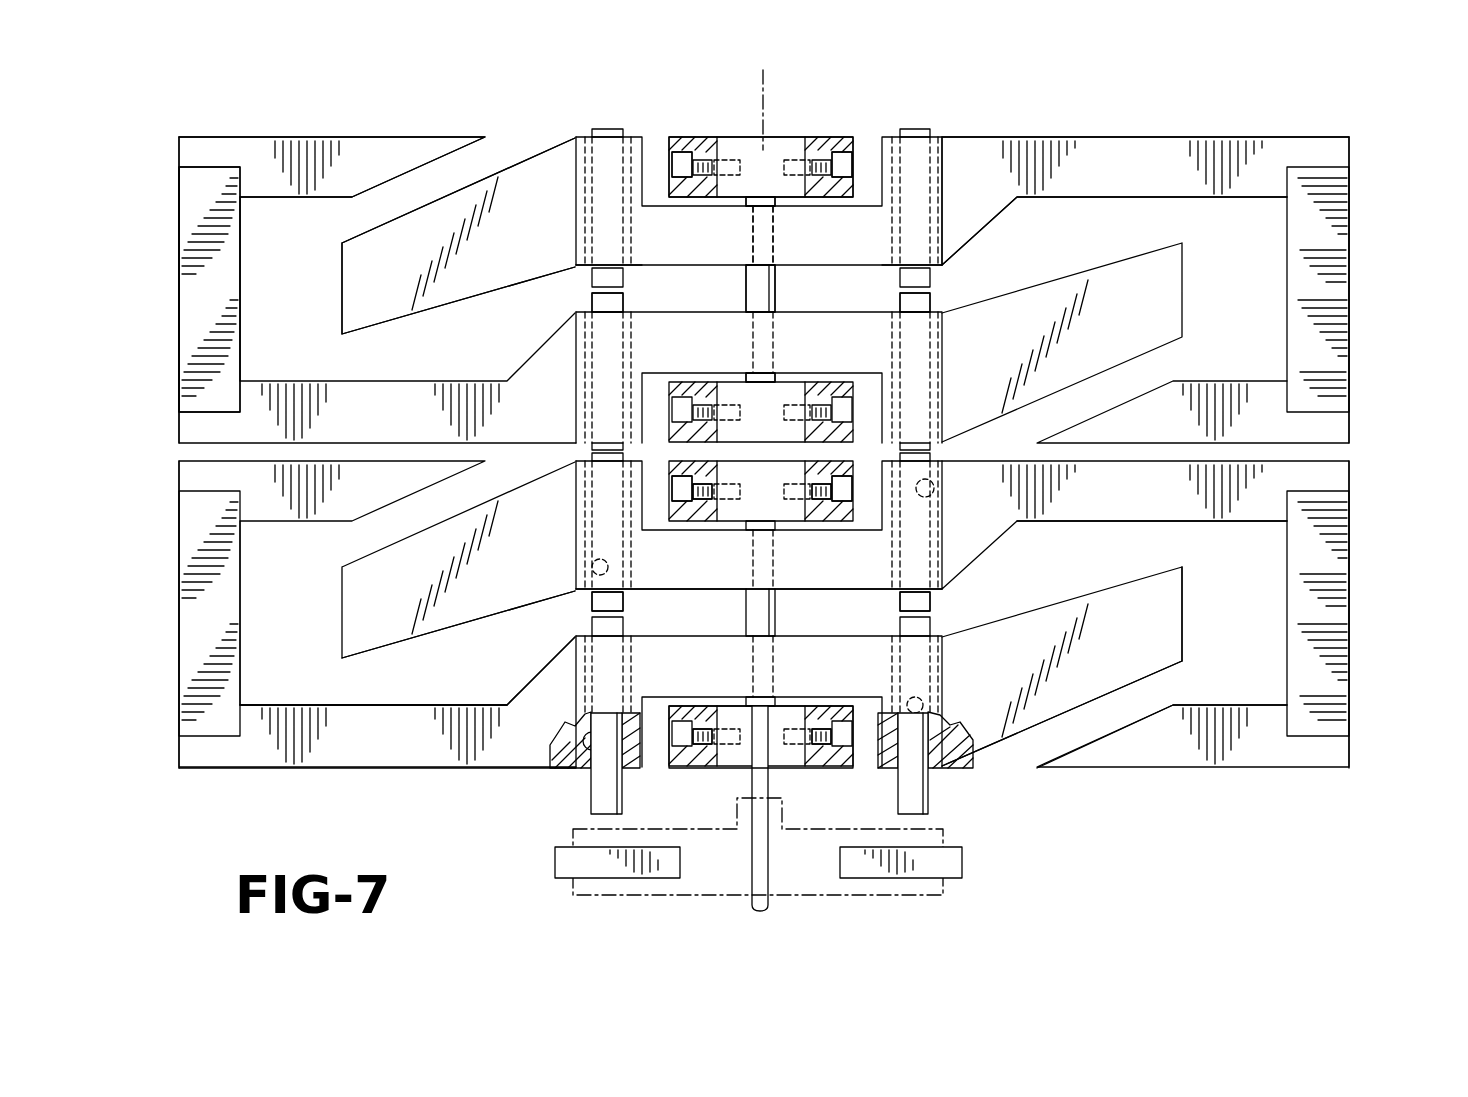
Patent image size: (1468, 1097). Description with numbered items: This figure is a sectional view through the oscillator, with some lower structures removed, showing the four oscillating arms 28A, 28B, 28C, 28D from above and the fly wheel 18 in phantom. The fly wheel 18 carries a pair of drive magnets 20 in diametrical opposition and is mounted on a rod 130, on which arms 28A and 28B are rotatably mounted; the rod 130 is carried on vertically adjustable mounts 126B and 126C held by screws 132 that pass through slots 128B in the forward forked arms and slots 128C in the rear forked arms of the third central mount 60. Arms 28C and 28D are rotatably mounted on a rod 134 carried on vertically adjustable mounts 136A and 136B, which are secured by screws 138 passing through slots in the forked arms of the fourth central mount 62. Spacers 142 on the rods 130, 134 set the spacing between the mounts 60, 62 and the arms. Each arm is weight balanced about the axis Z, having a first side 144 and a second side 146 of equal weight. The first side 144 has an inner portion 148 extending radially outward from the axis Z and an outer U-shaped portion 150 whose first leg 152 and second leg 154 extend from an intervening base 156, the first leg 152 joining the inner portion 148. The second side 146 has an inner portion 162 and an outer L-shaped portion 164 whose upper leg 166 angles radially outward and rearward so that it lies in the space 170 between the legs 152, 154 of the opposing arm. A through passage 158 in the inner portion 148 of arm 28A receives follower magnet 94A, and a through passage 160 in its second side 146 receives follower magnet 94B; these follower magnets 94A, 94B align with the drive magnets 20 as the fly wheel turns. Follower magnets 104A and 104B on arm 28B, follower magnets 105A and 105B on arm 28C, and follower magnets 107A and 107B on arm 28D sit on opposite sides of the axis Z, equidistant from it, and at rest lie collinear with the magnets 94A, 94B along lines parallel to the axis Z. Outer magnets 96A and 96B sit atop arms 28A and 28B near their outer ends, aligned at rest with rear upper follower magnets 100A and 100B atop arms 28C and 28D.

The fly wheel 18 is at (925, 896).
The drive magnets 20 is at (558, 862).
The oscillating arm 28A is at (240, 772).
The oscillating arm 28B is at (1292, 772).
The oscillating arm 28C is at (232, 132).
The oscillating arm 28D is at (1258, 132).
The third central mount 60 is at (684, 768).
The fourth central mount 62 is at (712, 150).
The follower magnet 94A is at (598, 790).
The follower magnet 94B is at (920, 790).
The front upper drive magnet 96A is at (190, 620).
The front upper drive magnet 96B is at (1340, 603).
The rear upper follower magnet 100A is at (197, 300).
The rear upper follower magnet 100B is at (1340, 272).
The follower magnet 104A is at (590, 600).
The follower magnet 104B is at (938, 598).
The follower magnet 105A is at (588, 300).
The follower magnet 105B is at (945, 300).
The follower magnet 107A is at (590, 268).
The follower magnet 107B is at (935, 268).
The vertically adjustable mount 126B is at (790, 760).
The vertically adjustable mount 126C is at (785, 518).
The slots 128B is at (702, 750).
The slots 128C is at (695, 508).
The rod 130 is at (752, 865).
The screws 132 is at (675, 485).
The rod 134 is at (752, 240).
The vertically adjustable mount 136A is at (790, 390).
The vertically adjustable mount 136B is at (795, 150).
The screws 138 is at (688, 160).
The spacers 142 is at (768, 208).
The first side 144 is at (420, 772).
The second side 146 is at (412, 652).
The inner portion 148 is at (668, 650).
The outer U-shaped portion 150 is at (292, 770).
The first leg 152 is at (1130, 140).
The second leg 154 is at (332, 133).
The base 156 is at (1350, 225).
The through passage 158 is at (934, 487).
The through passage 160 is at (592, 567).
The inner portion 162 is at (862, 650).
The outer L-shaped portion 164 is at (1128, 683).
The upper leg 166 is at (355, 263).
The space 170 is at (270, 653).
The axis Z is at (770, 78).